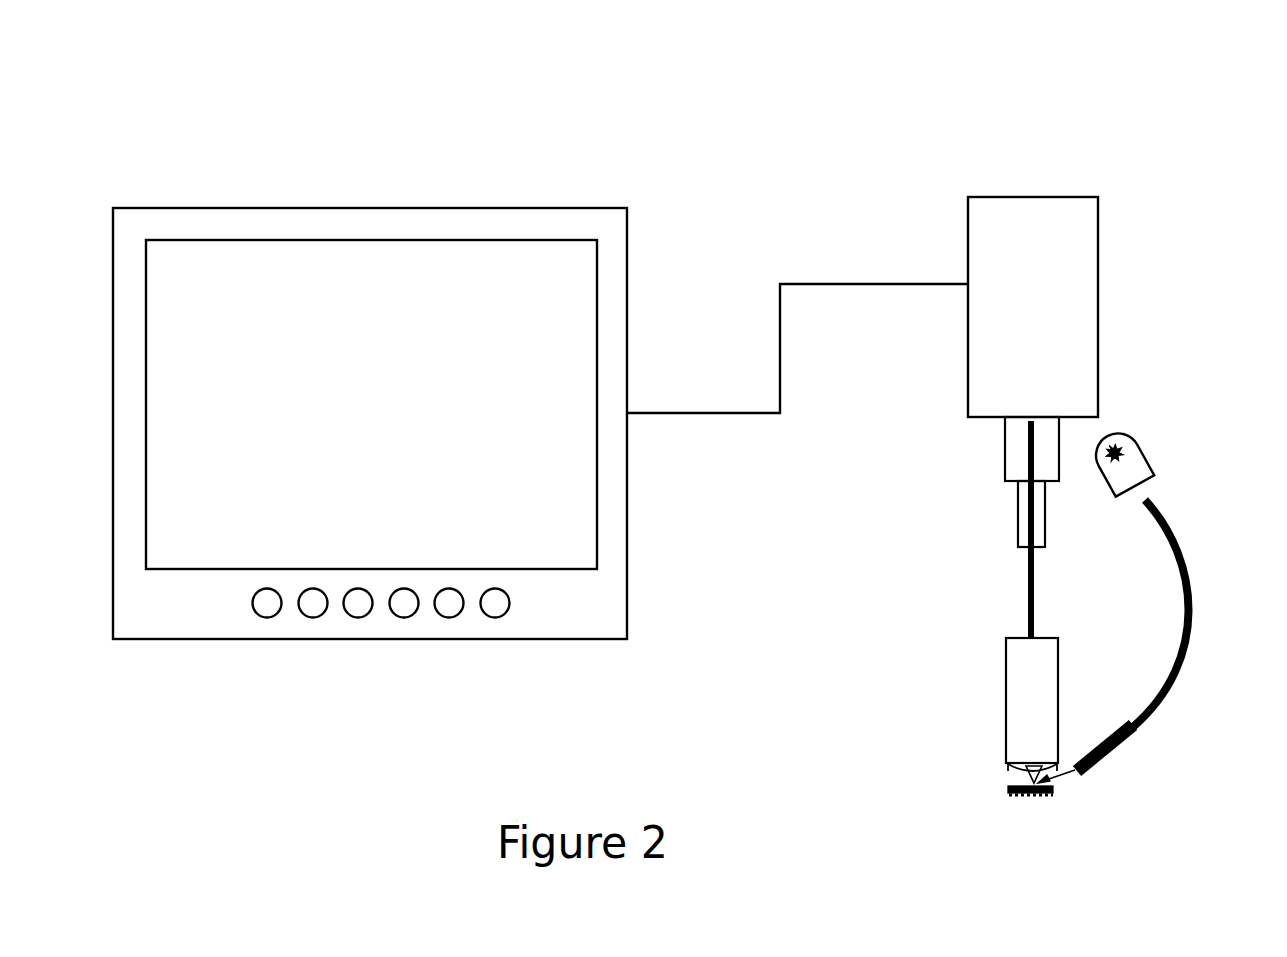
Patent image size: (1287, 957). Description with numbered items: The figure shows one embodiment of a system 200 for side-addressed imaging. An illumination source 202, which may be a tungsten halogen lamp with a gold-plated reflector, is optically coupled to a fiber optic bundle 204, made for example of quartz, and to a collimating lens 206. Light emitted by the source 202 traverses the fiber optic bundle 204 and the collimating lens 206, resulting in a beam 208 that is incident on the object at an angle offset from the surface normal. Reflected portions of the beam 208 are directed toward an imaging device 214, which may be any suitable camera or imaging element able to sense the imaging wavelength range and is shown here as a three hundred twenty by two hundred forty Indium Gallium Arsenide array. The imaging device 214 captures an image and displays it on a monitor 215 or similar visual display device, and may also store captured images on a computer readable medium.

The system for side-addressed imaging 200 is at (945, 88).
The illumination source 202 is at (1140, 440).
The fiber optic bundle 204 is at (1190, 596).
The collimating lens 206 is at (1112, 753).
The beam 208 is at (1055, 779).
The imaging device 214 is at (1099, 243).
The monitor 215 is at (628, 485).